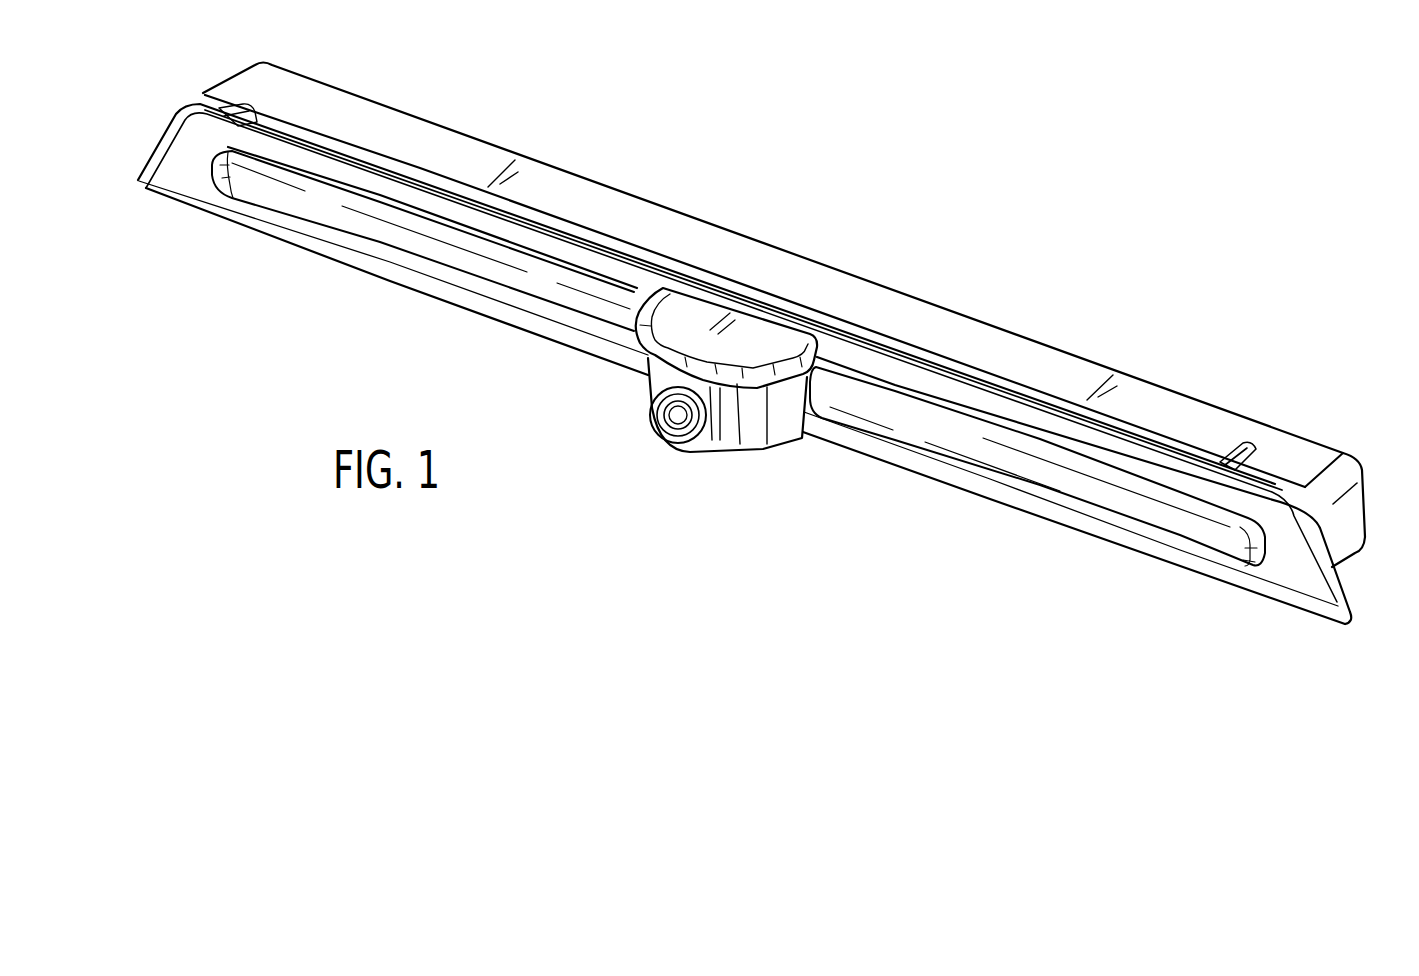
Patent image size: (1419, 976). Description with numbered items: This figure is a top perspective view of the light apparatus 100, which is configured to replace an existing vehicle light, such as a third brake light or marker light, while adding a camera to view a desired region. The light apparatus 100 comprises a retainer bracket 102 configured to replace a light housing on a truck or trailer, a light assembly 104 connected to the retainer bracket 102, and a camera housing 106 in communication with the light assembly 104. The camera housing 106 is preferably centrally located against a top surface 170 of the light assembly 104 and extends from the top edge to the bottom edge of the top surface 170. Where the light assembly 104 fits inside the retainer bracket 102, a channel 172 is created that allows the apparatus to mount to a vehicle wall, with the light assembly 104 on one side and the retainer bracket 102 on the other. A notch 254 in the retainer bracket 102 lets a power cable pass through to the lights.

The light apparatus 100 is at (1024, 235).
The retainer bracket 102 is at (478, 140).
The light assembly 104 is at (196, 134).
The camera housing 106 is at (756, 423).
The top surface 170 is at (607, 352).
The channel 172 is at (1261, 487).
The notch 254 is at (1232, 445).